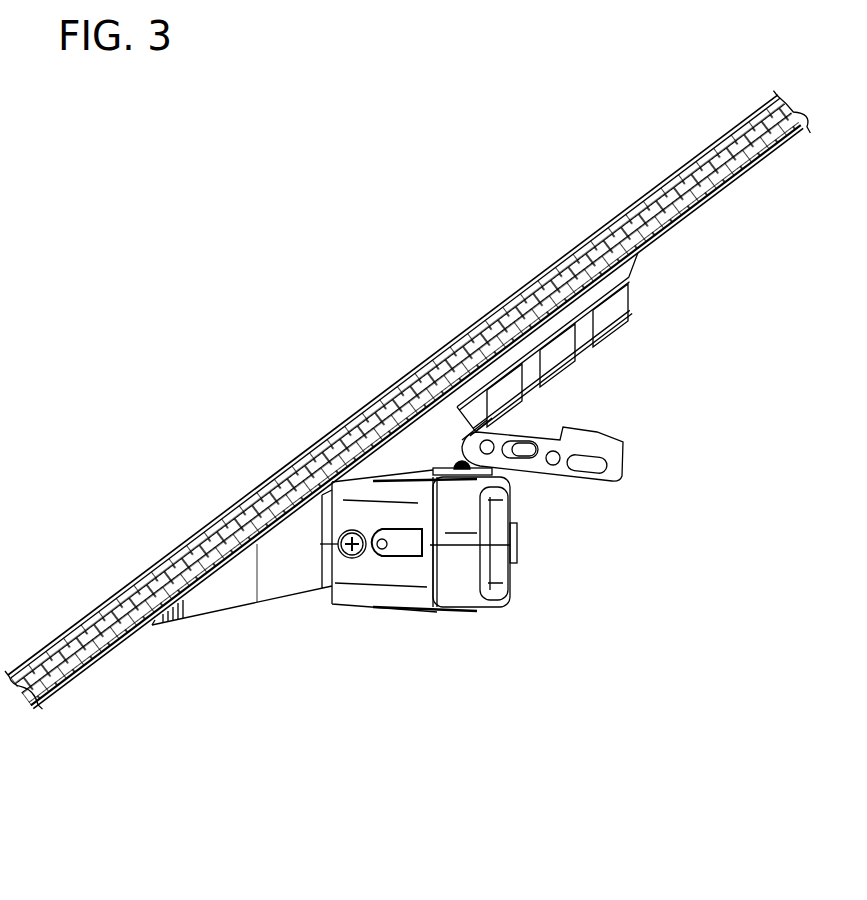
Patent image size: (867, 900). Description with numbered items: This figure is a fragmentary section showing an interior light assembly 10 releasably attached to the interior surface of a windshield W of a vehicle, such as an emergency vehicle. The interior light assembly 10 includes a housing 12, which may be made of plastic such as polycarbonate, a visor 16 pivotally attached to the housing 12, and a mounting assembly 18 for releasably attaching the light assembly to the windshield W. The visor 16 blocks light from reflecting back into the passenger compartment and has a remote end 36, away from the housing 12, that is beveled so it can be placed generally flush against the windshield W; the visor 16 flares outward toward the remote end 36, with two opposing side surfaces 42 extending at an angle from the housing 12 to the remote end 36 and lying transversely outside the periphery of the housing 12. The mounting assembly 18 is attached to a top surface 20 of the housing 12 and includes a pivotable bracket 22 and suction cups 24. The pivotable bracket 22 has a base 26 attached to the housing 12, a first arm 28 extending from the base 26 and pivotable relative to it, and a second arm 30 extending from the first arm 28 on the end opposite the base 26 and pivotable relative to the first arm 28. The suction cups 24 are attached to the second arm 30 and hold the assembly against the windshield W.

The interior light assembly 10 is at (530, 678).
The housing 12 is at (463, 573).
The visor 16 is at (195, 605).
The mounting assembly 18 is at (664, 394).
The top surface 20 is at (352, 456).
The pivotable bracket 22 is at (576, 435).
The suction cups 24 is at (590, 265).
The base 26 is at (455, 463).
The first arm 28 is at (563, 438).
The second arm 30 is at (612, 348).
The remote end 36 is at (192, 580).
The side surfaces 42 is at (270, 580).
The windshield W is at (395, 392).